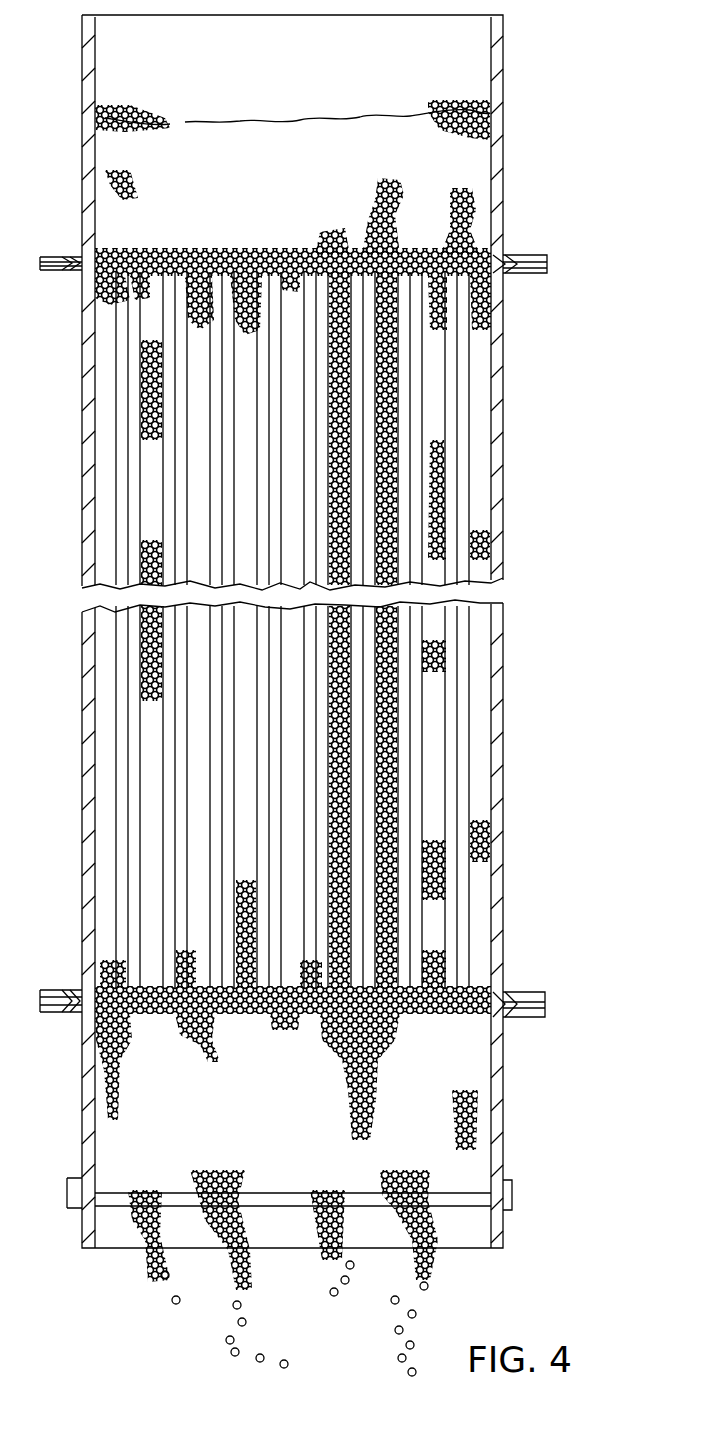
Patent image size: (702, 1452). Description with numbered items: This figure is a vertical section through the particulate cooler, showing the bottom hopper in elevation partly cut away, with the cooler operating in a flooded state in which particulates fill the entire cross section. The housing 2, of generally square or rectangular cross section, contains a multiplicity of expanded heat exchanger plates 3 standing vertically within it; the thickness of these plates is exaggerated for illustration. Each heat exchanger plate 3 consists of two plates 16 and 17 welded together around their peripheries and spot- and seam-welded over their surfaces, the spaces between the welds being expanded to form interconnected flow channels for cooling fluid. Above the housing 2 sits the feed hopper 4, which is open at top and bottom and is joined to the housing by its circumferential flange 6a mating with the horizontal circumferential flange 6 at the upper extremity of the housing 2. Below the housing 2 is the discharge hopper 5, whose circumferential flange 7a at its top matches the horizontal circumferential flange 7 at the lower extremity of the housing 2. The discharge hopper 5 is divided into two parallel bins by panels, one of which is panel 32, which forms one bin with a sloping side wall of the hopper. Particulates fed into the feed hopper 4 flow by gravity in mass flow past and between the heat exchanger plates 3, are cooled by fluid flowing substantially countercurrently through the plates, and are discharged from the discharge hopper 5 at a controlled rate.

The housing 2 is at (503, 562).
The heat exchanger plates 3 is at (470, 713).
The feed hopper 4 is at (503, 205).
The discharge hopper 5 is at (503, 1113).
The horizontal circumferential flange 6 is at (527, 274).
The circumferential flange 6a is at (527, 258).
The horizontal circumferential flange 7 is at (523, 992).
The circumferential flange 7a is at (536, 1017).
The plate 16 is at (472, 452).
The plate 17 is at (450, 507).
The panel 32 is at (203, 1149).